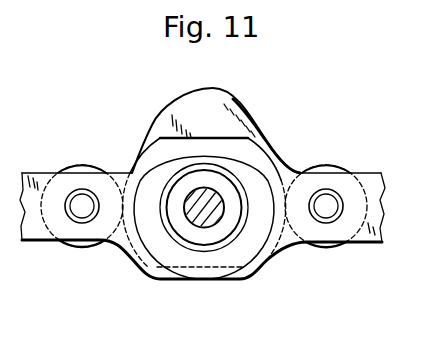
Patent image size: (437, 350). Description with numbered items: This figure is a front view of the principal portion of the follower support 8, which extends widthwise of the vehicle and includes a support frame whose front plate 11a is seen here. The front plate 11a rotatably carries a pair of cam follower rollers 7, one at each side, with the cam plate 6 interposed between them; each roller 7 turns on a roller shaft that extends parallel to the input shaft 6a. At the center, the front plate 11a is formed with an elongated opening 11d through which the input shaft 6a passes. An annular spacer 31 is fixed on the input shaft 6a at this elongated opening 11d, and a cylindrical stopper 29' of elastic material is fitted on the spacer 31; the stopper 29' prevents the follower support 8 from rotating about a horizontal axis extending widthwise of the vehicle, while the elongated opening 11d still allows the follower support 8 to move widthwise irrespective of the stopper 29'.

The cam plate 6 is at (238, 93).
The input shaft 6a is at (210, 221).
The cam follower roller 7 is at (80, 167).
The follower support 8 is at (296, 156).
The front plate 11a is at (33, 243).
The elongated opening 11d is at (266, 243).
The stopper 29' is at (185, 247).
The annular spacer 31 is at (225, 237).